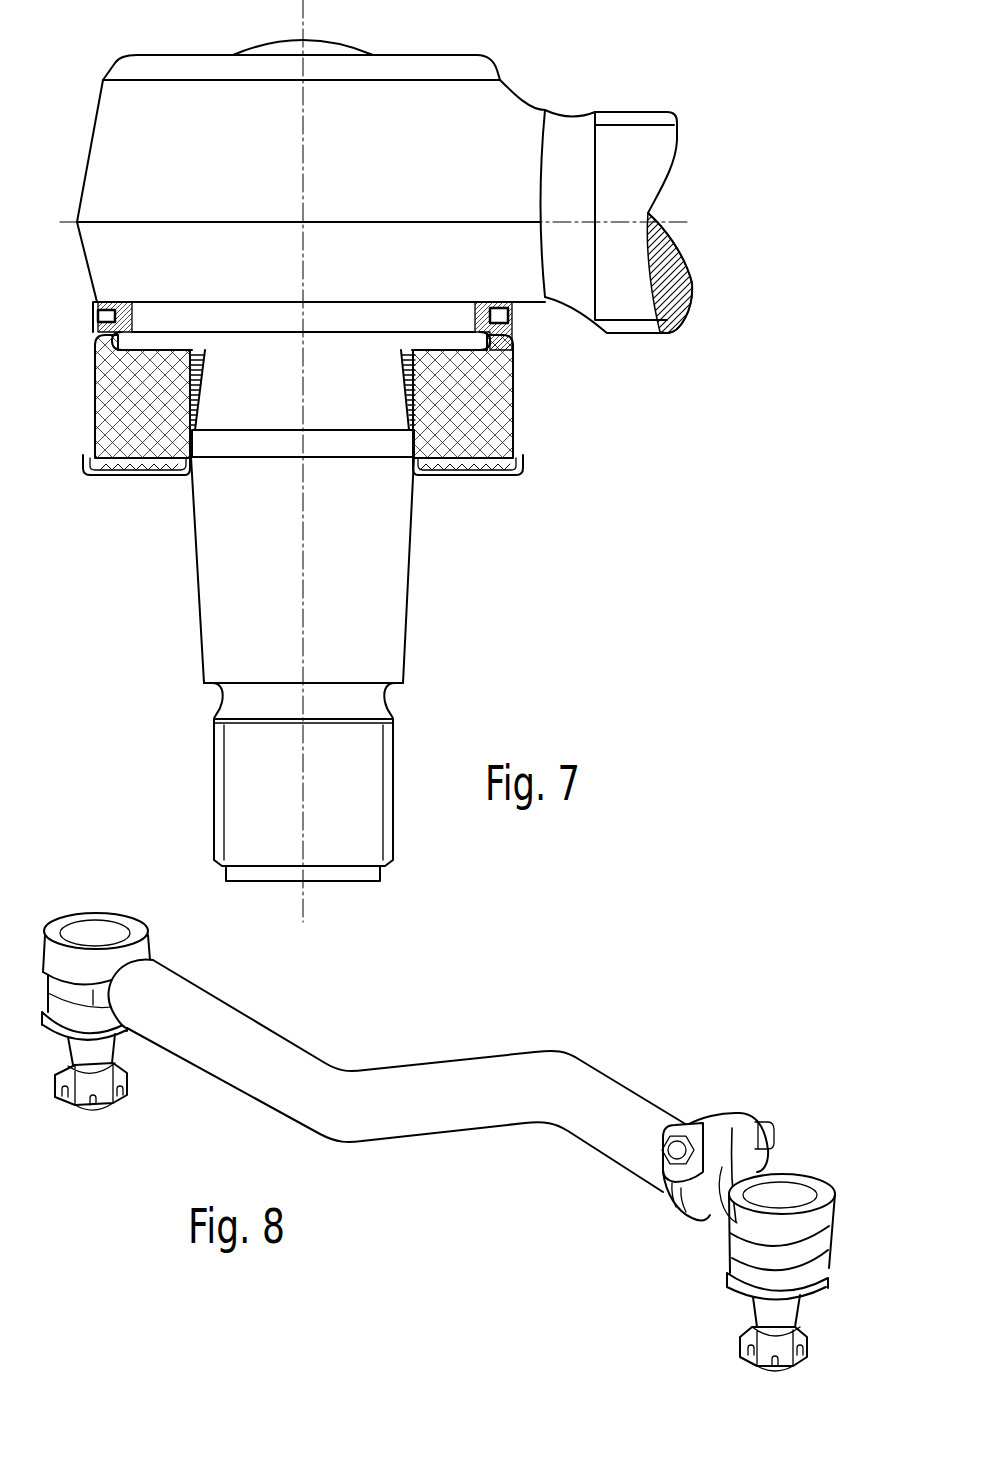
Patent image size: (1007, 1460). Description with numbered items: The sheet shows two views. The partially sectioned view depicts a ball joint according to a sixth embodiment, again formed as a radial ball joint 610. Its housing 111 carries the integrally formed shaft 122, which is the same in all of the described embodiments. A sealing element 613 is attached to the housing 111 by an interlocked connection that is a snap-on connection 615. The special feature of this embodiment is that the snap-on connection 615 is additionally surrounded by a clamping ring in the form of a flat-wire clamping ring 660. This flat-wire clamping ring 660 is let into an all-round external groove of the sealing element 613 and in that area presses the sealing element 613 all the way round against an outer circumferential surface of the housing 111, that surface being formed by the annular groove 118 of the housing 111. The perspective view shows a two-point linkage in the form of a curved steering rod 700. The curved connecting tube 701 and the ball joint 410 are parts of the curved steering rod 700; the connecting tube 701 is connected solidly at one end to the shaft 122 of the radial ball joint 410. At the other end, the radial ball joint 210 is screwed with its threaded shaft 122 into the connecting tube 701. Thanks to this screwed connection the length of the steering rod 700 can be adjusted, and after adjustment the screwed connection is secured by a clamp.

In FIG. 7, the housing 111 is at (85, 145).
In FIG. 7, the radial ball joint 610 is at (568, 98).
In FIG. 7, the shaft 122 is at (662, 140).
In FIG. 8, the shaft 122 is at (710, 1197).
In FIG. 7, the annular groove 118 is at (162, 312).
In FIG. 7, the flat-wire clamping ring 660 is at (93, 318).
In FIG. 7, the snap-on connection 615 is at (457, 322).
In FIG. 7, the sealing element 613 is at (525, 438).
In FIG. 8, the ball joint 410 is at (118, 910).
In FIG. 8, the curved steering rod 700 is at (478, 1023).
In FIG. 8, the connecting tube 701 is at (477, 1143).
In FIG. 8, the radial ball joint 210 is at (807, 1172).